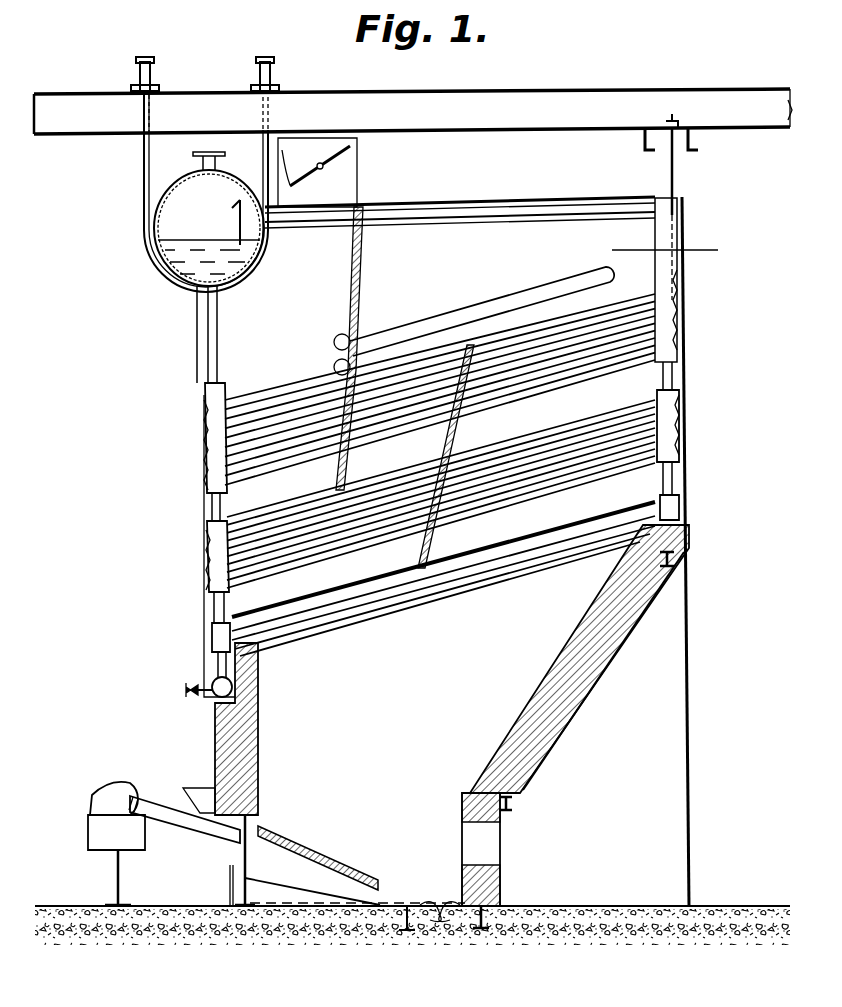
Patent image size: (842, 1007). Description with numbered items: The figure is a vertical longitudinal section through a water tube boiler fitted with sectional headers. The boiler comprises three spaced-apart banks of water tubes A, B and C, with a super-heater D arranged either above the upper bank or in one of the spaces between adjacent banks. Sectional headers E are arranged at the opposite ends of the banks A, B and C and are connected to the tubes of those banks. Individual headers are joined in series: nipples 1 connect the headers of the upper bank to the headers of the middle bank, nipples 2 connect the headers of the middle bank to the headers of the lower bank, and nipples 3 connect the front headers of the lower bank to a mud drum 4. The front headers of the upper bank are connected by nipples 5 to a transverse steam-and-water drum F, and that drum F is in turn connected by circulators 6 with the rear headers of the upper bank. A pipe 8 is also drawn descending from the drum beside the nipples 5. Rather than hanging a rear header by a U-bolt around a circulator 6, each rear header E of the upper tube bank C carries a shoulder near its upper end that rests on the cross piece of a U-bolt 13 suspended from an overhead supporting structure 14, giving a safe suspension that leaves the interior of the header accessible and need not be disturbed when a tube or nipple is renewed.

The overhead supporting structure 14 is at (684, 112).
The U-bolt 13 is at (676, 173).
The circulator 6 is at (521, 226).
The steam-and-water drum F is at (182, 238).
The downcomer pipe 8 is at (201, 361).
The nipples 5 is at (212, 340).
The sectional headers E is at (210, 458).
The nipples 1 is at (222, 508).
The nipples 2 is at (227, 611).
The nipples 3 is at (239, 674).
The mud drum 4 is at (217, 698).
The super-heater D is at (488, 300).
The upper bank of water tubes C is at (575, 388).
The middle bank of water tubes B is at (545, 507).
The lower bank of water tubes A is at (497, 562).